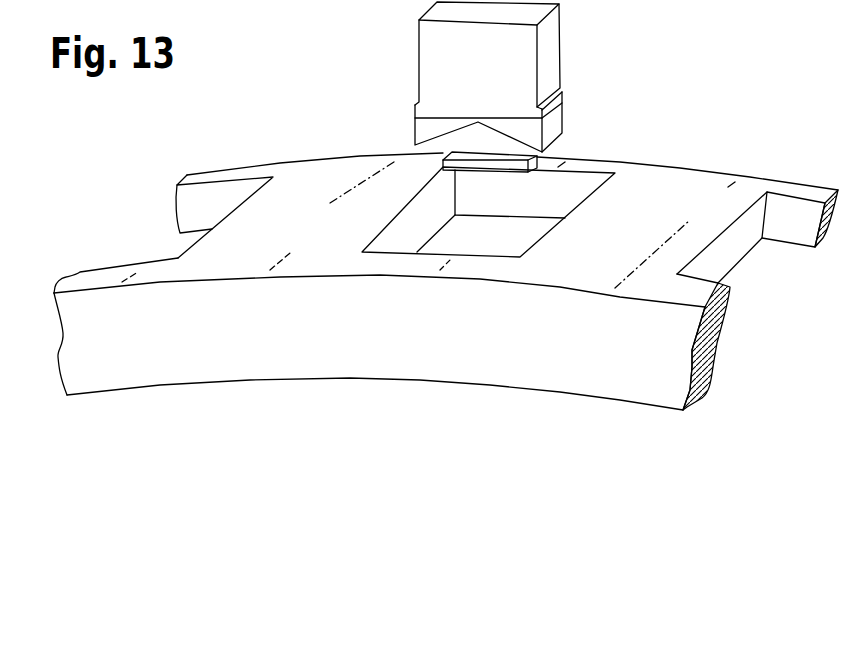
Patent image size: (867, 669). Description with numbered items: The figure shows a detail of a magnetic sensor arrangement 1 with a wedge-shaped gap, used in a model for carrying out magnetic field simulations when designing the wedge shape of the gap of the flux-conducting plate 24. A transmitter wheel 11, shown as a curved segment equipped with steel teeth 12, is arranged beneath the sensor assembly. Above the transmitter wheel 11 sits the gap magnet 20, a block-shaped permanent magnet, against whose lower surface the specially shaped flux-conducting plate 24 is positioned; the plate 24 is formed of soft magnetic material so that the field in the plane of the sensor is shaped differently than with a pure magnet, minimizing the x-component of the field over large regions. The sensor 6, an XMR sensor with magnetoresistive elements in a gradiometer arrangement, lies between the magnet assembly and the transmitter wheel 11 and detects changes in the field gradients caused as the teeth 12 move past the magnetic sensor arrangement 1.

The magnetic sensor arrangement 1 is at (582, 63).
The sensor 6 is at (483, 165).
The transmitter wheel 11 is at (350, 337).
The teeth 12 is at (640, 225).
The gap magnet 20 is at (445, 53).
The flux-conducting plate 24 is at (428, 128).